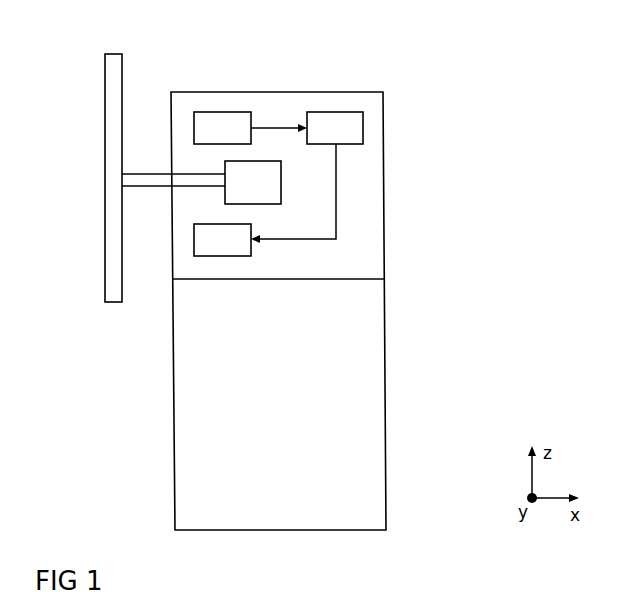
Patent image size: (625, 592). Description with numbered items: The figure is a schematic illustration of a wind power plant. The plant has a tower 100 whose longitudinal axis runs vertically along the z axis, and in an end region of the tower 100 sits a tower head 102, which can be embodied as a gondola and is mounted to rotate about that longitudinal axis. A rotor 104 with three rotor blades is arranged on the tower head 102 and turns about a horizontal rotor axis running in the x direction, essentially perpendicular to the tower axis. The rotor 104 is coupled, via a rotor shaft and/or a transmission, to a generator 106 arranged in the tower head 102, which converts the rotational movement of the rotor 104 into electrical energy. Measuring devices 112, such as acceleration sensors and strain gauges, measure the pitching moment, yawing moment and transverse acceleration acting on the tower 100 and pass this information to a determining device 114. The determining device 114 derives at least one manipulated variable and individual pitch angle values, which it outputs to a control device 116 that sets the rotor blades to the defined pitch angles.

The tower 100 is at (409, 87).
The tower head 102 is at (384, 237).
The rotor 104 is at (122, 55).
The generator 106 is at (201, 182).
The measuring devices 112 is at (250, 128).
The determining device 114 is at (307, 177).
The control device 116 is at (222, 240).